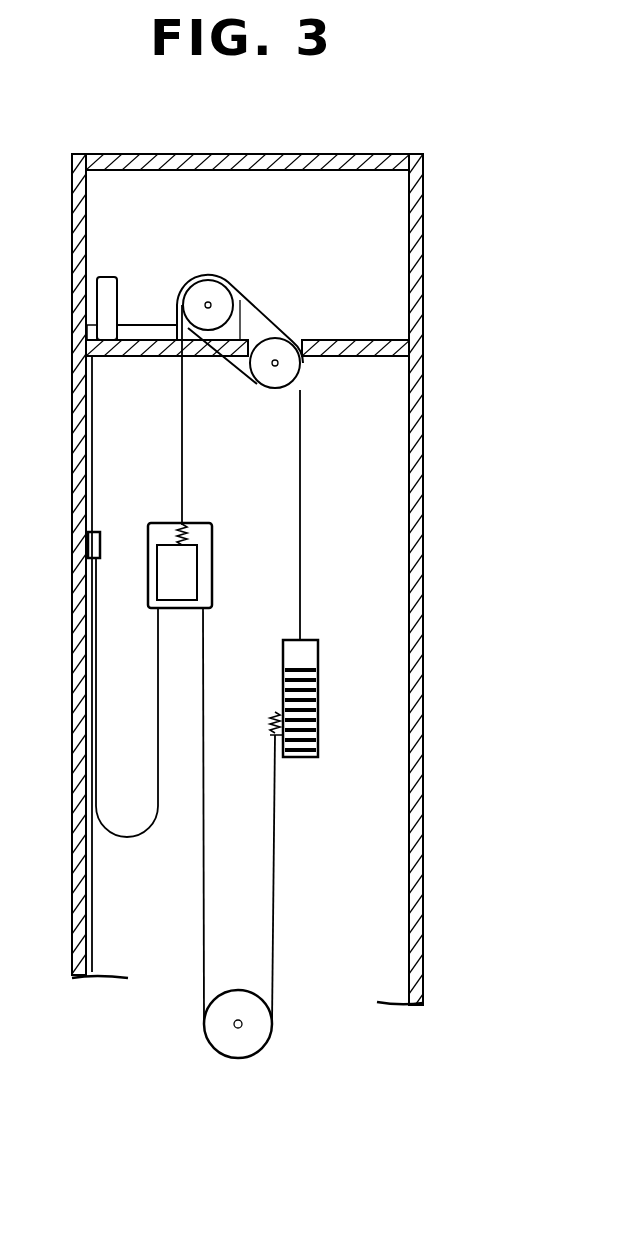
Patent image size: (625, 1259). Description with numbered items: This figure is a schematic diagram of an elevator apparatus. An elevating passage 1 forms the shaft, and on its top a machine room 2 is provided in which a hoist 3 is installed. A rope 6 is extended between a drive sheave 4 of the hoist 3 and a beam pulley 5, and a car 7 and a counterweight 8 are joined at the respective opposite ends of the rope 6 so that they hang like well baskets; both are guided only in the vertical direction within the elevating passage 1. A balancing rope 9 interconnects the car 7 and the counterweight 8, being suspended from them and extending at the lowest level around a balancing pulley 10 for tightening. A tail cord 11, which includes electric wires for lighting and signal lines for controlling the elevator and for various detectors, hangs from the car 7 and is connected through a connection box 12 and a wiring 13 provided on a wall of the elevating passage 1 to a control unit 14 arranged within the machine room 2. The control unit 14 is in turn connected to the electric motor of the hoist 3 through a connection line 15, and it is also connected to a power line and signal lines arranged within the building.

The elevating passage 1 is at (395, 500).
The machine room 2 is at (393, 266).
The hoist 3 is at (236, 293).
The drive sheave 4 is at (207, 290).
The beam pulley 5 is at (270, 380).
The rope 6 is at (182, 447).
The car 7 is at (185, 574).
The counterweight 8 is at (322, 702).
The balancing rope 9 is at (203, 862).
The balancing pulley 10 is at (258, 1030).
The tail cord 11 is at (154, 723).
The connection box 12 is at (122, 524).
The wiring 13 is at (92, 380).
The control unit 14 is at (102, 276).
The connection line 15 is at (141, 325).